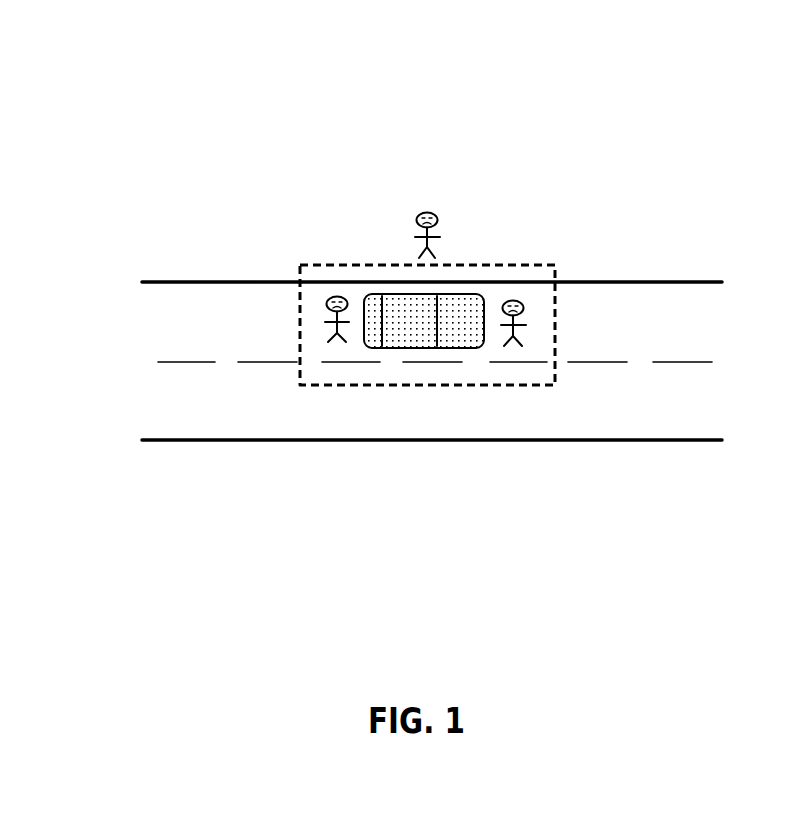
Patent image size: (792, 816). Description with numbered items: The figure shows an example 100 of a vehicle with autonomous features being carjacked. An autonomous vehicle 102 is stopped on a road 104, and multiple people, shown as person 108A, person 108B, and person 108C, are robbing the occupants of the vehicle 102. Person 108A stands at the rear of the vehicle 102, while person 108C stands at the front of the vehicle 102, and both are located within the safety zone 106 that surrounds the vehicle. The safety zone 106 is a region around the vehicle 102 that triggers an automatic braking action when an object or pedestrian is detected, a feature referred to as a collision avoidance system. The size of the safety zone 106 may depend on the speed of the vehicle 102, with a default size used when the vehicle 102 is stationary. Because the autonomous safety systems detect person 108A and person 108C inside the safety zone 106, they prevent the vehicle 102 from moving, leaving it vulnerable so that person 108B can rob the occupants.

The example 100 is at (90, 111).
The autonomous vehicle 102 is at (413, 328).
The road 104 is at (221, 297).
The safety zone 106 is at (517, 263).
The person 108A is at (328, 309).
The person 108B is at (428, 203).
The person 108C is at (523, 314).